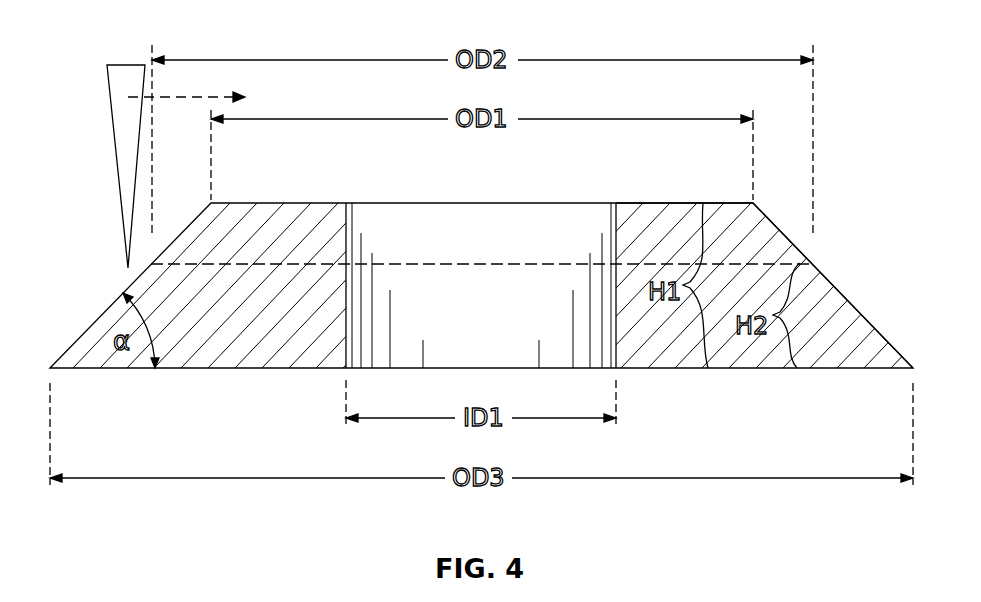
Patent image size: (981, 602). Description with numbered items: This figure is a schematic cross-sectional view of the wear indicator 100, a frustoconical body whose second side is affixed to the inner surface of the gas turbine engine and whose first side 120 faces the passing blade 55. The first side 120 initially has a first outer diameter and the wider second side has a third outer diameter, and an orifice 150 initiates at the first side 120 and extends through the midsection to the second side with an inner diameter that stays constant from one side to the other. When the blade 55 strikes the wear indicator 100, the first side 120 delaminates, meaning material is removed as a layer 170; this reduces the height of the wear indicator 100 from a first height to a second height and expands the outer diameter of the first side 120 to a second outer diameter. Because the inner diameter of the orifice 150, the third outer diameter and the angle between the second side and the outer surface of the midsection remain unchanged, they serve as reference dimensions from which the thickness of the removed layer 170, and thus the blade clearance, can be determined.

The blade 55 is at (123, 140).
The wear indicator 100 is at (113, 284).
The first side 120 is at (682, 203).
The orifice 150 is at (432, 222).
The layer 170 is at (800, 228).